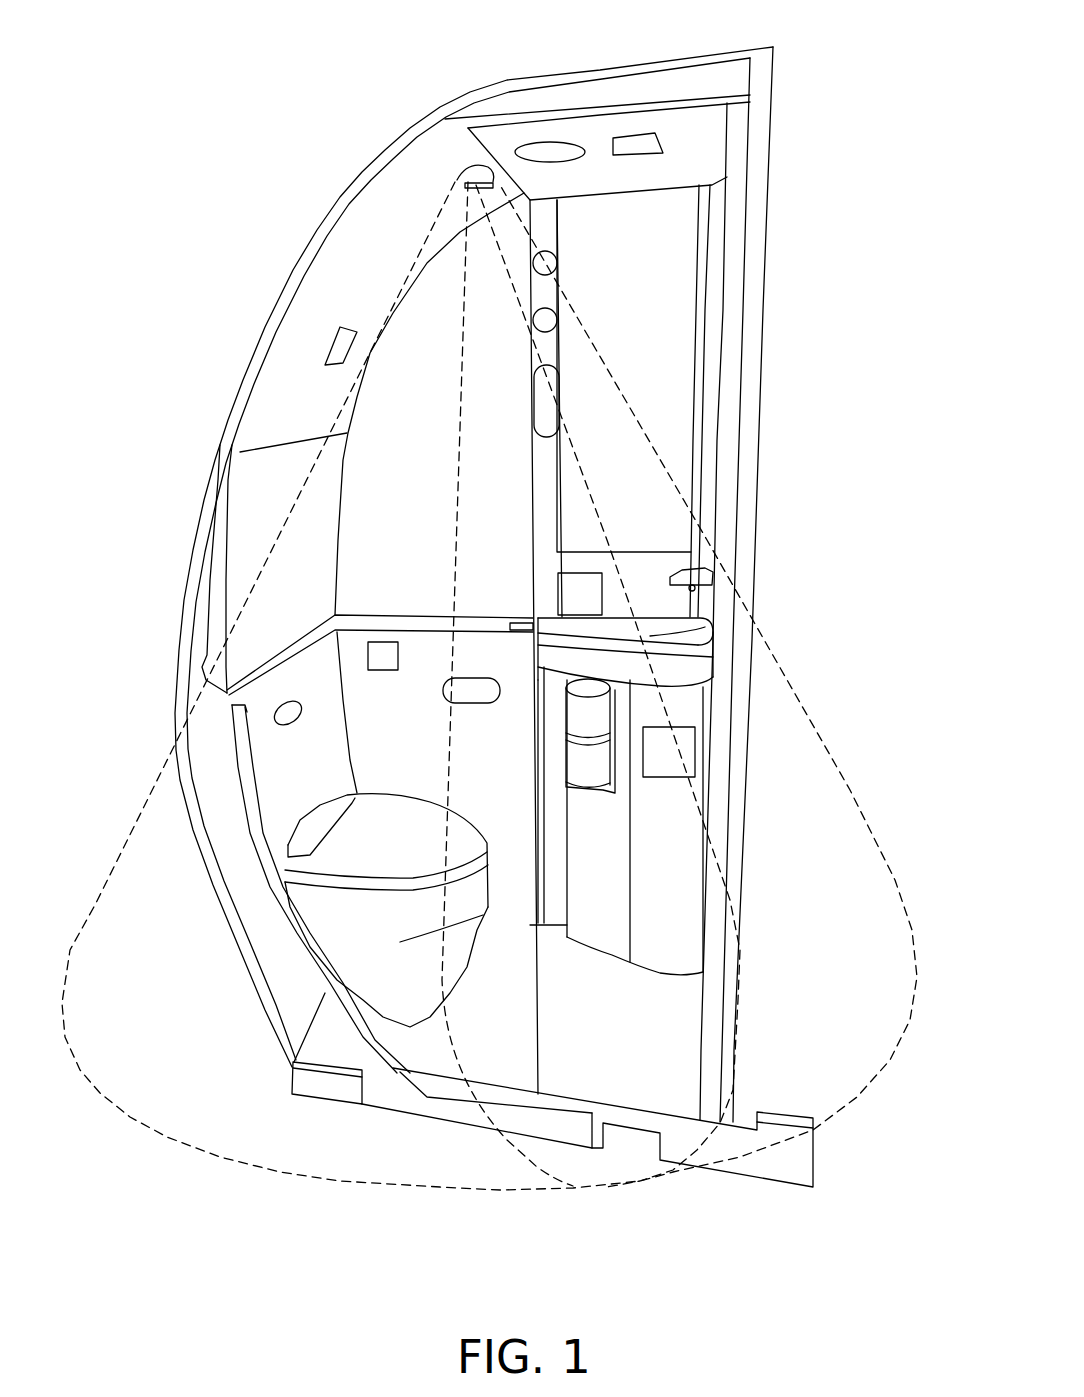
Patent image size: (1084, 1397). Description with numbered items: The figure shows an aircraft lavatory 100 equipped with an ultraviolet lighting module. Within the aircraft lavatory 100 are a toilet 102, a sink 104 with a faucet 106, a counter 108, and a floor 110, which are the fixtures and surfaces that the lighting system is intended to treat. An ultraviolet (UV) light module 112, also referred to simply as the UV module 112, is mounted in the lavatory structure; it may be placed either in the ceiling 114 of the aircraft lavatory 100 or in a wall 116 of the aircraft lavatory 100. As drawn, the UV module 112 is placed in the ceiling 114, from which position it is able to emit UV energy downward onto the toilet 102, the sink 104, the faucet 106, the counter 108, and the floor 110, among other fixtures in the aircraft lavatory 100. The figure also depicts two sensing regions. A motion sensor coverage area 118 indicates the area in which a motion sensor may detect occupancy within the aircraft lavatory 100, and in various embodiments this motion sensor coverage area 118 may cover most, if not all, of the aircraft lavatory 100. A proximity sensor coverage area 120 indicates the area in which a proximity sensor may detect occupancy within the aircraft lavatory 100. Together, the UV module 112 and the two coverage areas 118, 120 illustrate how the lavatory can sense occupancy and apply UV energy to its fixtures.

The aircraft lavatory 100 is at (200, 96).
The toilet 102 is at (411, 855).
The sink 104 is at (663, 637).
The faucet 106 is at (700, 572).
The counter 108 is at (558, 618).
The floor 110 is at (559, 1024).
The ultraviolet light module 112 is at (465, 182).
The ceiling 114 is at (437, 117).
The wall 116 is at (253, 425).
The motion sensor coverage area 118 is at (830, 743).
The proximity sensor coverage area 120 is at (715, 873).